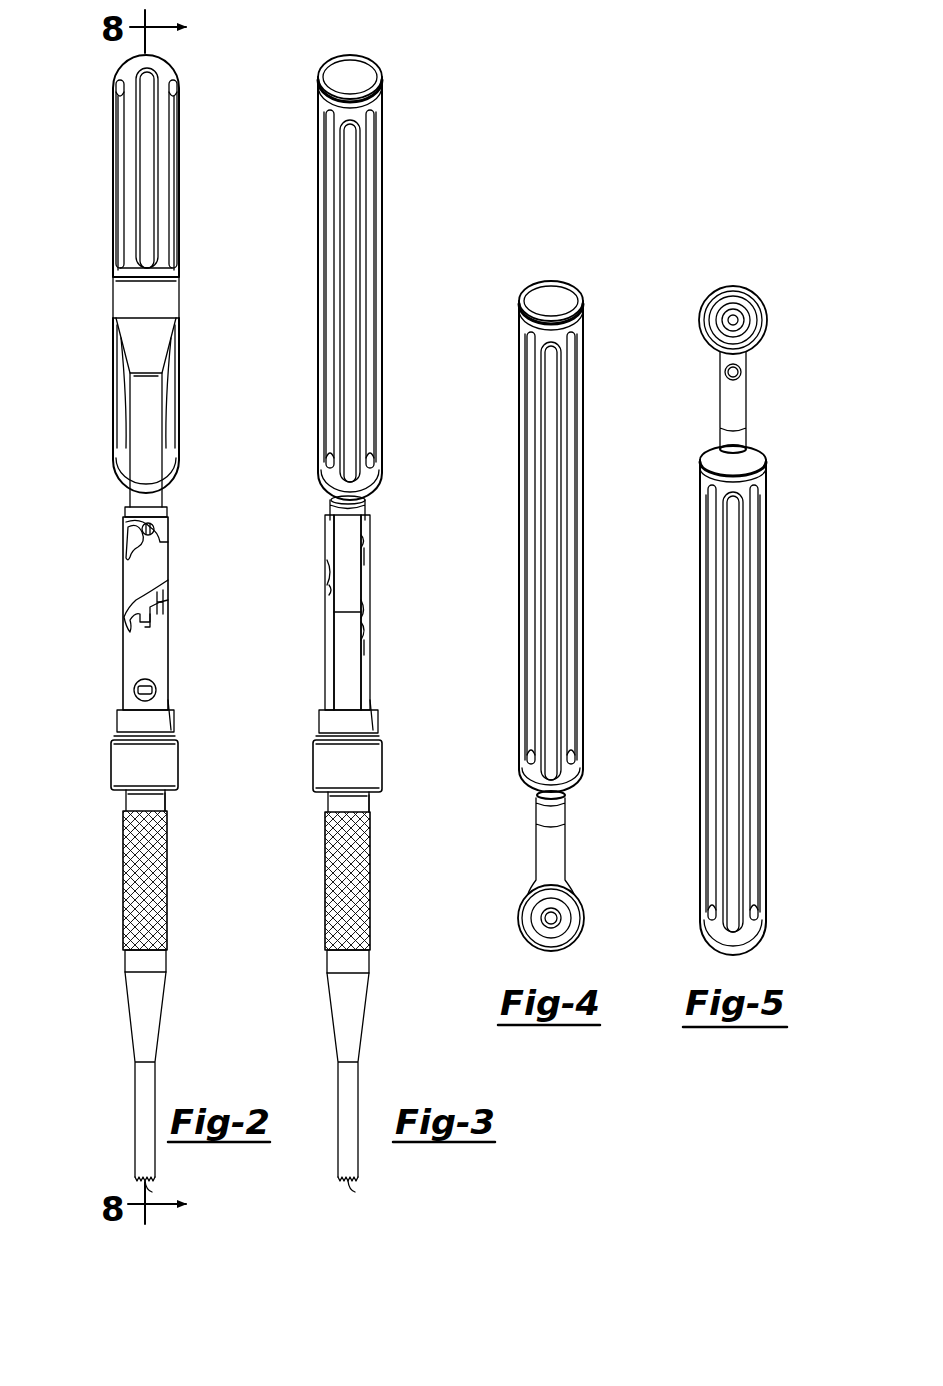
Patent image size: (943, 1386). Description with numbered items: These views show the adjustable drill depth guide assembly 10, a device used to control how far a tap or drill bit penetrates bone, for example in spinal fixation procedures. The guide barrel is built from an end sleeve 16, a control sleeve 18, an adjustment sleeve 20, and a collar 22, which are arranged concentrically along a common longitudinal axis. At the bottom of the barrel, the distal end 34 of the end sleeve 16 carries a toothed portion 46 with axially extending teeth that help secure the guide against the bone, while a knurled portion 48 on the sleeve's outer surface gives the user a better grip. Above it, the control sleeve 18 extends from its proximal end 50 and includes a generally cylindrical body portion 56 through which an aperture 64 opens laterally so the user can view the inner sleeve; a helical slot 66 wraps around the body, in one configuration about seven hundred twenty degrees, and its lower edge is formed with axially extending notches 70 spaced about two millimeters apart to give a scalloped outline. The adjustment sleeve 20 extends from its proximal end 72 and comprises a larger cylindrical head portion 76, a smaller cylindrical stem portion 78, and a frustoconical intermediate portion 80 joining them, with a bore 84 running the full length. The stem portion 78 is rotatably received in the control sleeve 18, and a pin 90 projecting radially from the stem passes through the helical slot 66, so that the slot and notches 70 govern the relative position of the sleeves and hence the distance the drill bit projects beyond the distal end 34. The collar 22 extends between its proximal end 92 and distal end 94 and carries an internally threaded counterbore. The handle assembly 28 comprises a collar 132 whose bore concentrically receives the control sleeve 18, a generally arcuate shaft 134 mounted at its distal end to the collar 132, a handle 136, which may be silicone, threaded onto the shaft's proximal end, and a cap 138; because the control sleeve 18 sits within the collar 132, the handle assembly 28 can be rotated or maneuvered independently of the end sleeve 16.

In FIG. 2, the adjustable drill depth guide assembly 10 is at (98, 80).
In FIG. 3, the adjustable drill depth guide assembly 10 is at (300, 80).
In FIG. 4, the adjustable drill depth guide assembly 10 is at (512, 290).
In FIG. 5, the adjustable drill depth guide assembly 10 is at (700, 290).
In FIG. 2, the end sleeve 16 is at (122, 940).
In FIG. 3, the end sleeve 16 is at (323, 922).
In FIG. 5, the end sleeve 16 is at (745, 330).
In FIG. 2, the control sleeve 18 is at (120, 594).
In FIG. 3, the control sleeve 18 is at (322, 605).
In FIG. 4, the adjustment sleeve 20 is at (513, 918).
In FIG. 2, the collar 22 is at (110, 775).
In FIG. 3, the collar 22 is at (312, 775).
In FIG. 2, the handle assembly 28 is at (159, 274).
In FIG. 3, the handle assembly 28 is at (395, 262).
In FIG. 4, the handle assembly 28 is at (594, 570).
In FIG. 5, the handle assembly 28 is at (775, 612).
In FIG. 2, the distal end 34 is at (135, 1177).
In FIG. 3, the distal end 34 is at (338, 1177).
In FIG. 5, the distal end 34 is at (720, 320).
In FIG. 2, the toothed portion 46 is at (152, 1190).
In FIG. 3, the toothed portion 46 is at (355, 1190).
In FIG. 5, the toothed portion 46 is at (742, 318).
In FIG. 2, the knurled portion 48 is at (135, 868).
In FIG. 2, the proximal end 50 is at (125, 509).
In FIG. 3, the proximal end 50 is at (372, 510).
In FIG. 2, the body portion 56 is at (165, 555).
In FIG. 2, the aperture 64 is at (140, 690).
In FIG. 2, the helical slot 66 is at (168, 584).
In FIG. 3, the helical slot 66 is at (368, 623).
In FIG. 2, the notches 70 is at (165, 626).
In FIG. 2, the proximal end 72 is at (150, 265).
In FIG. 4, the proximal end 72 is at (572, 932).
In FIG. 2, the head portion 76 is at (120, 297).
In FIG. 2, the stem portion 78 is at (140, 413).
In FIG. 2, the intermediate portion 80 is at (130, 345).
In FIG. 4, the bore 84 is at (560, 912).
In FIG. 2, the pin 90 is at (160, 527).
In FIG. 2, the proximal end 92 is at (166, 728).
In FIG. 3, the proximal end 92 is at (371, 728).
In FIG. 2, the distal end 94 is at (170, 797).
In FIG. 3, the distal end 94 is at (373, 797).
In FIG. 2, the collar 132 is at (120, 720).
In FIG. 3, the collar 132 is at (322, 720).
In FIG. 3, the shaft 134 is at (345, 650).
In FIG. 4, the shaft 134 is at (548, 845).
In FIG. 5, the shaft 134 is at (730, 408).
In FIG. 3, the handle 136 is at (345, 255).
In FIG. 4, the handle 136 is at (552, 440).
In FIG. 5, the handle 136 is at (735, 635).
In FIG. 3, the cap 138 is at (345, 78).
In FIG. 4, the cap 138 is at (552, 300).